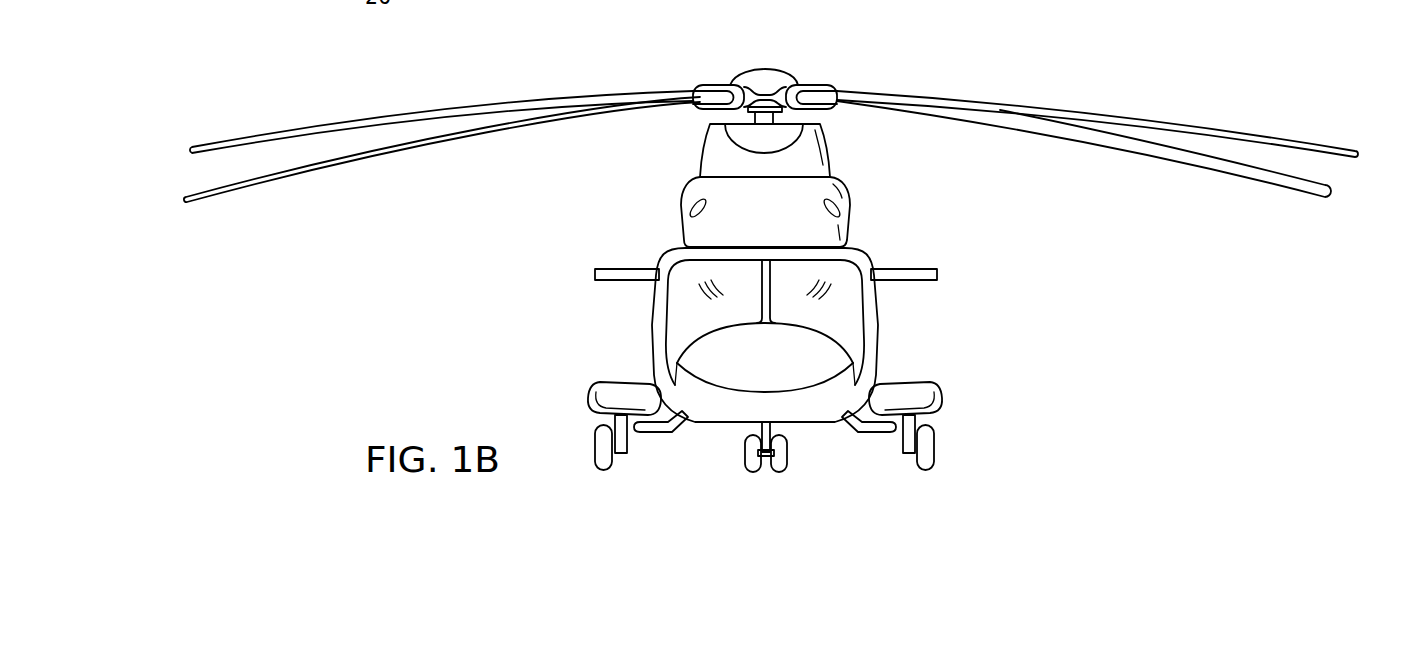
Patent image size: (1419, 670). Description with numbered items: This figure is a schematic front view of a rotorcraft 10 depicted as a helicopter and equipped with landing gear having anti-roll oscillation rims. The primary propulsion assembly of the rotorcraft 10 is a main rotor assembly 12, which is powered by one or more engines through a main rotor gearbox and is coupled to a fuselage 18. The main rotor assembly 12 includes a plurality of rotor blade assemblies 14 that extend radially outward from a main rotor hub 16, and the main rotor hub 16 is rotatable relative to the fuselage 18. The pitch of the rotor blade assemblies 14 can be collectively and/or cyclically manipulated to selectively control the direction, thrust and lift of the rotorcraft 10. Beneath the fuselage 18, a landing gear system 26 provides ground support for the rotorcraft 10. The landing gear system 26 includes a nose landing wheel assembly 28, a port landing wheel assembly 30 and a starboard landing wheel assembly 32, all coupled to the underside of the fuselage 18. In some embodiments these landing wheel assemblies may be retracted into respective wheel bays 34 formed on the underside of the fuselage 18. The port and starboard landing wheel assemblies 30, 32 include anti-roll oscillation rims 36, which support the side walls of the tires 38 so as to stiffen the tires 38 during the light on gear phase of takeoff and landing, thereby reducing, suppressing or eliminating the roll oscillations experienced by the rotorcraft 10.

The rotorcraft 10 is at (681, 59).
The main rotor assembly 12 is at (750, 63).
The rotor blade assemblies 14 is at (253, 134).
The main rotor hub 16 is at (786, 70).
The fuselage 18 is at (878, 334).
The landing gear system 26 is at (948, 476).
The nose landing wheel assembly 28 is at (745, 456).
The port landing wheel assembly 30 is at (918, 468).
The starboard landing wheel assembly 32 is at (610, 469).
The wheel bays 34 is at (937, 405).
The anti-roll oscillation rims 36 is at (935, 438).
The tires 38 is at (599, 423).